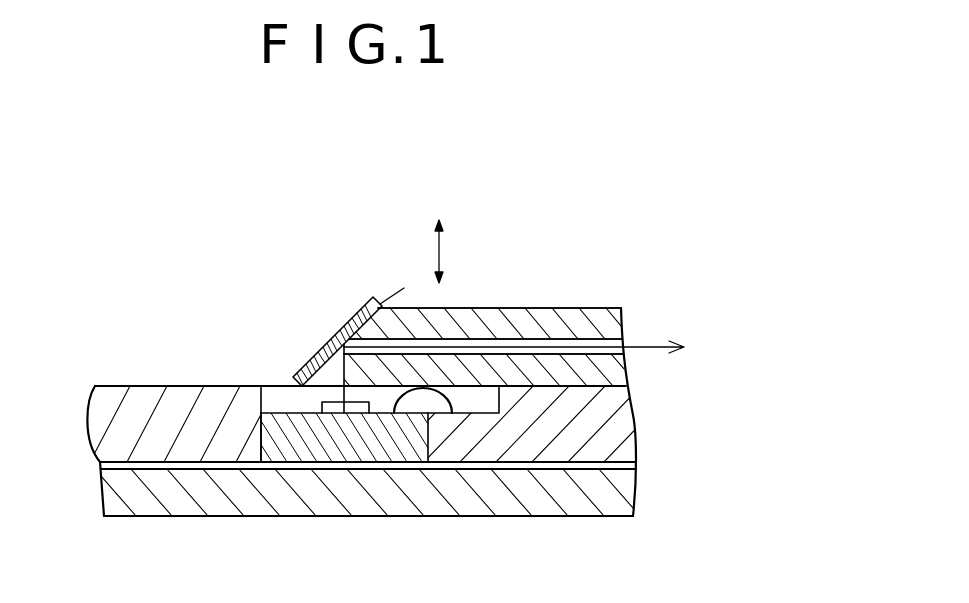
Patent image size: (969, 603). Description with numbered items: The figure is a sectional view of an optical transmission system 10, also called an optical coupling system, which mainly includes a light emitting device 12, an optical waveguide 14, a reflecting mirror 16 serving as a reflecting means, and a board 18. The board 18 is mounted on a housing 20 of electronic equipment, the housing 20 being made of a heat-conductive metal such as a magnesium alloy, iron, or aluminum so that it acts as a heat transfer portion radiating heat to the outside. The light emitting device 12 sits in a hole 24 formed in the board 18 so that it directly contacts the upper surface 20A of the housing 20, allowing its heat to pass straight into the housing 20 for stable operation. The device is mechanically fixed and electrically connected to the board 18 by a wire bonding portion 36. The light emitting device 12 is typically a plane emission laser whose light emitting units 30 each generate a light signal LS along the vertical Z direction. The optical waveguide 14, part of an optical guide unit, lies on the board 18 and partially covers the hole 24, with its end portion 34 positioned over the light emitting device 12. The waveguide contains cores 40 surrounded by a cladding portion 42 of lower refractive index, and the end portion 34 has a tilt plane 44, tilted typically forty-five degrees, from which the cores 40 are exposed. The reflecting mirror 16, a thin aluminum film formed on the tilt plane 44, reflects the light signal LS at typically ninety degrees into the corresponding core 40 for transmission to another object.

The optical transmission system 10 is at (205, 240).
The light emitting device 12 is at (396, 440).
The optical waveguide 14 is at (528, 307).
The reflecting mirror 16 is at (342, 370).
The board 18 is at (127, 403).
The housing 20 is at (603, 498).
The upper surface 20A is at (588, 463).
The hole 24 is at (264, 428).
The light emitting unit 30 is at (265, 386).
The end portion 34 is at (470, 287).
The wire bonding portion 36 is at (460, 397).
The core 40 is at (617, 341).
The cladding portion 42 is at (582, 325).
The tilt plane 44 is at (360, 328).
The light signal LS is at (665, 351).
The Z direction Z is at (441, 252).